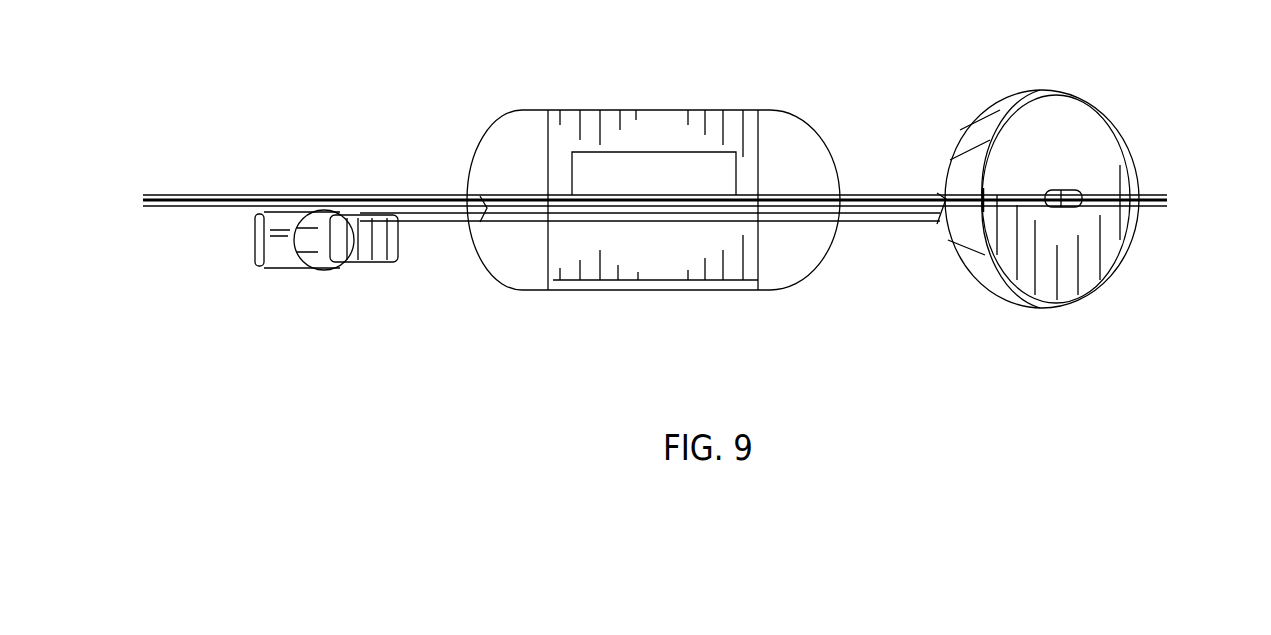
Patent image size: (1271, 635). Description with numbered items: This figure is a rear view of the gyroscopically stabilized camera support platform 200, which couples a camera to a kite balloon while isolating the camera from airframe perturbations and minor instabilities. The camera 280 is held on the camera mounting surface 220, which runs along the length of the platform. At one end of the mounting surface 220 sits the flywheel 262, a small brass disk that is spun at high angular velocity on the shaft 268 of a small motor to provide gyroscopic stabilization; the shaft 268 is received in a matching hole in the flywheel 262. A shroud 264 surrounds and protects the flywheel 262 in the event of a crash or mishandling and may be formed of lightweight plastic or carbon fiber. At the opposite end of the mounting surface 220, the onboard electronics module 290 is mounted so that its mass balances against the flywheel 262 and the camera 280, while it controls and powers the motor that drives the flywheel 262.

The gyroscopically stabilized camera support platform 200 is at (228, 84).
The camera mounting surface 220 is at (404, 195).
The flywheel 262 is at (1073, 120).
The shroud 264 is at (975, 122).
The shaft 268 is at (1082, 203).
The camera 280 is at (462, 278).
The onboard electronics module 290 is at (258, 232).